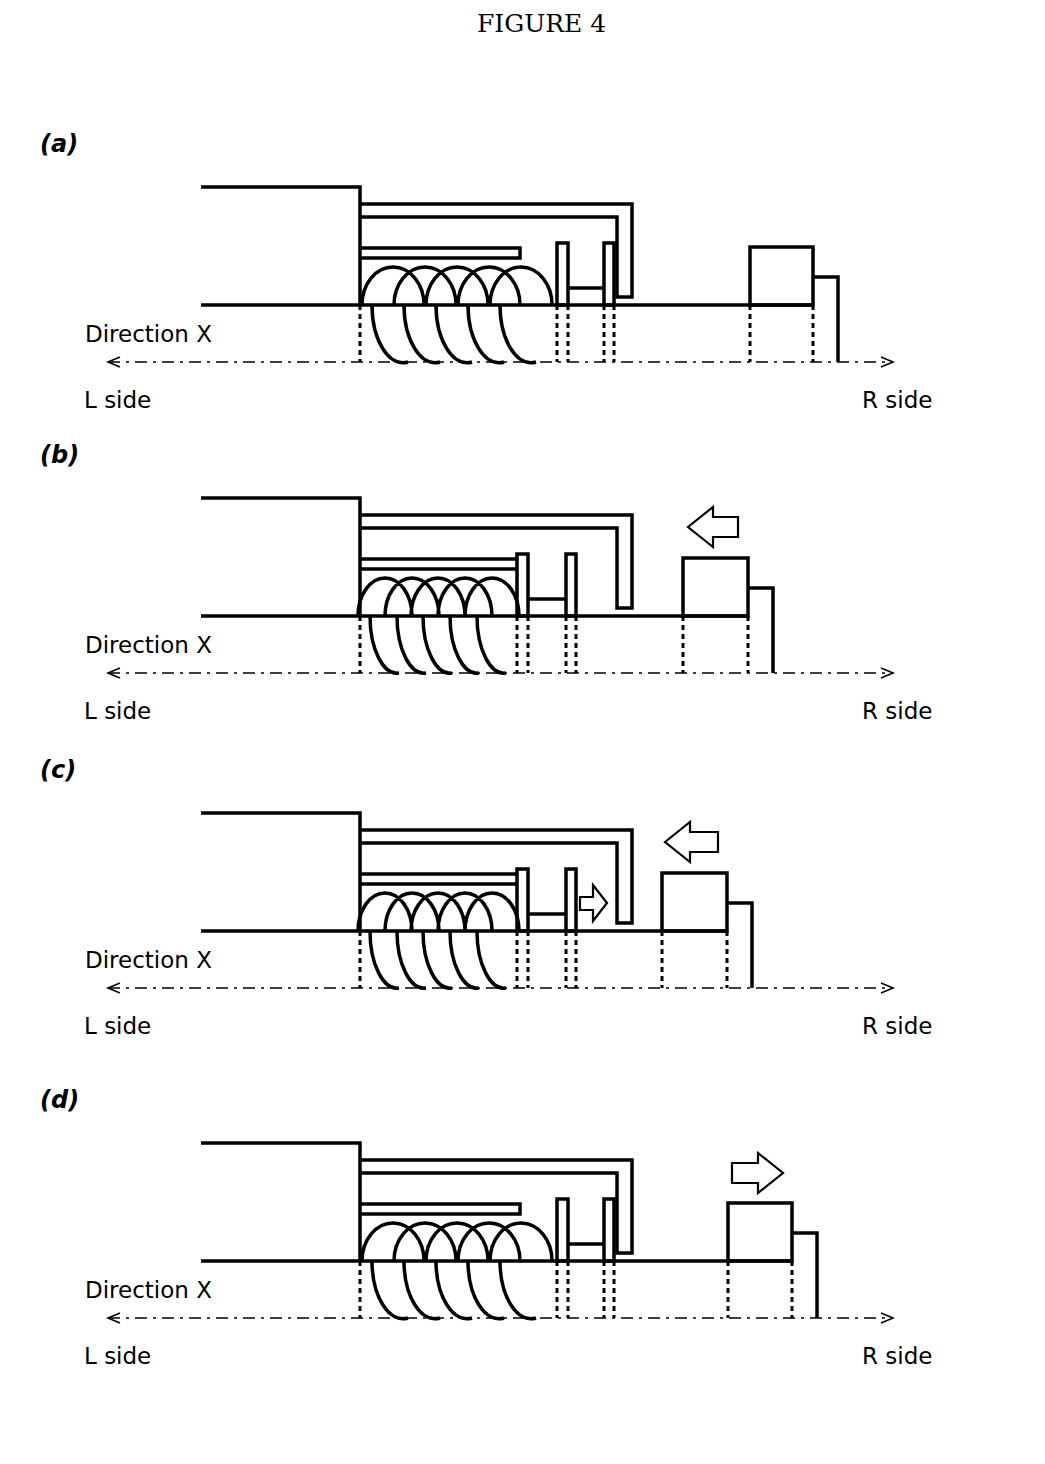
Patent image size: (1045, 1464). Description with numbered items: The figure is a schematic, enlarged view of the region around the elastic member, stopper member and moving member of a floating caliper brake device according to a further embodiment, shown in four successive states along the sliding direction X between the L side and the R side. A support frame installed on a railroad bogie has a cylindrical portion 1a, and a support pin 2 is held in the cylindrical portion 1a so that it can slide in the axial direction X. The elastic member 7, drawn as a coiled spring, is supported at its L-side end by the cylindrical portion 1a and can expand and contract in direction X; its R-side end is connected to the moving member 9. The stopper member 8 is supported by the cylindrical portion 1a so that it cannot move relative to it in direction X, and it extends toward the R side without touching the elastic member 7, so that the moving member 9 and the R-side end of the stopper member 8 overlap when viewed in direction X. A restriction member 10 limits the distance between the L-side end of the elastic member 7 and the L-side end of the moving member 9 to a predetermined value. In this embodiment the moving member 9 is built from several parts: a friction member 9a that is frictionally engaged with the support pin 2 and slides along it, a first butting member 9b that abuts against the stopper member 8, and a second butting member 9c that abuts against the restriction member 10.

The cylindrical portion 1a is at (305, 187).
The support pin 2 is at (688, 353).
The elastic member 7 is at (538, 347).
The stopper member 8 is at (428, 247).
The moving member 9 is at (617, 712).
The friction member 9a is at (585, 288).
The first butting member 9b is at (562, 243).
The second butting member 9c is at (638, 747).
The restriction member 10 is at (473, 202).